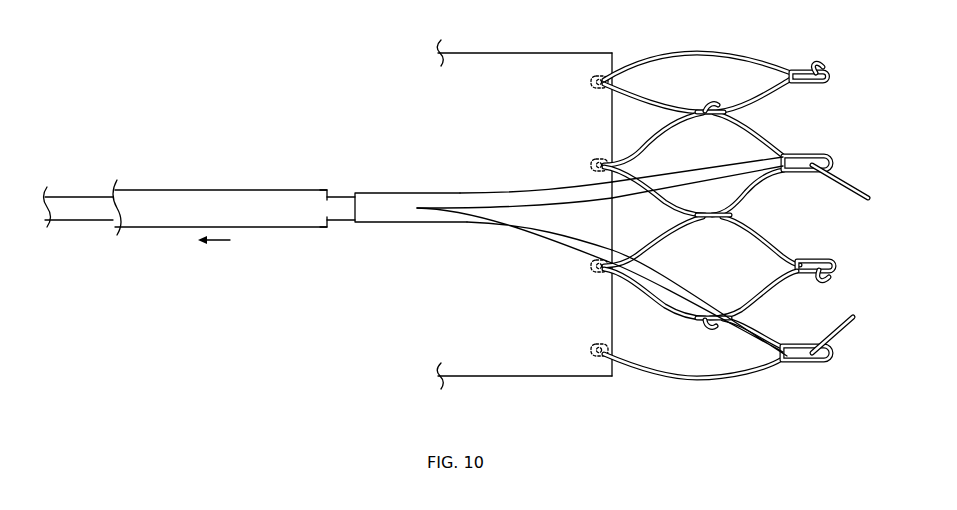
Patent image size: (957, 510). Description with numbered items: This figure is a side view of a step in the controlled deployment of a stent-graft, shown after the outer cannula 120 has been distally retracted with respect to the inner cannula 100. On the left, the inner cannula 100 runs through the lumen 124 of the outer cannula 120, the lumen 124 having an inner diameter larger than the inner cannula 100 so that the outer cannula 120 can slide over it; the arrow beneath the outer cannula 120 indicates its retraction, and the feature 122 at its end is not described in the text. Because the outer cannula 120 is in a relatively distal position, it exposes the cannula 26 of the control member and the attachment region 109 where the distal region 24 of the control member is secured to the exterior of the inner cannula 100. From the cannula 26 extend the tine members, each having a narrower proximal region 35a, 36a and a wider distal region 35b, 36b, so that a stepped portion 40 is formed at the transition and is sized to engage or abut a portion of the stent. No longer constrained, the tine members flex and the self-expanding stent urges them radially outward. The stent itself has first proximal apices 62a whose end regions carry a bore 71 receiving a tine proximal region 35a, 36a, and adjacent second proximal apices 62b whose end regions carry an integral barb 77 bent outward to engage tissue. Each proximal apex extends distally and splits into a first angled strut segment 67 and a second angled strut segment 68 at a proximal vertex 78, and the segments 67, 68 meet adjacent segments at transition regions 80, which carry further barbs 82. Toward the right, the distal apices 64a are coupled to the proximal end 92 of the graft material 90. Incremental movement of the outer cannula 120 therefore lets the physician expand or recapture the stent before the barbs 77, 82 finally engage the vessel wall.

The distal region 24 is at (632, 253).
The cannula 26 is at (393, 203).
The proximal region 35a is at (850, 193).
The distal region 35b is at (470, 200).
The proximal region 36a is at (853, 324).
The distal region 36b is at (493, 236).
The stepped portion 40 is at (787, 153).
The first proximal apex 62a is at (763, 252).
The second proximal apex 62b is at (764, 175).
The distal apex 64a is at (594, 160).
The first angled strut segment 67 is at (667, 134).
The second angled strut segment 68 is at (661, 293).
The bore 71 is at (830, 156).
The barb 77 is at (817, 69).
The proximal vertex 78 is at (796, 173).
The transition region 80 is at (698, 109).
The barb 82 is at (708, 104).
The graft material 90 is at (488, 65).
The proximal end 92 is at (606, 51).
The inner cannula 100 is at (210, 211).
The attachment region 109 is at (350, 196).
The outer cannula 120 is at (229, 196).
The distal lower edge of outer tube 122 is at (331, 223).
The lumen 124 is at (333, 190).